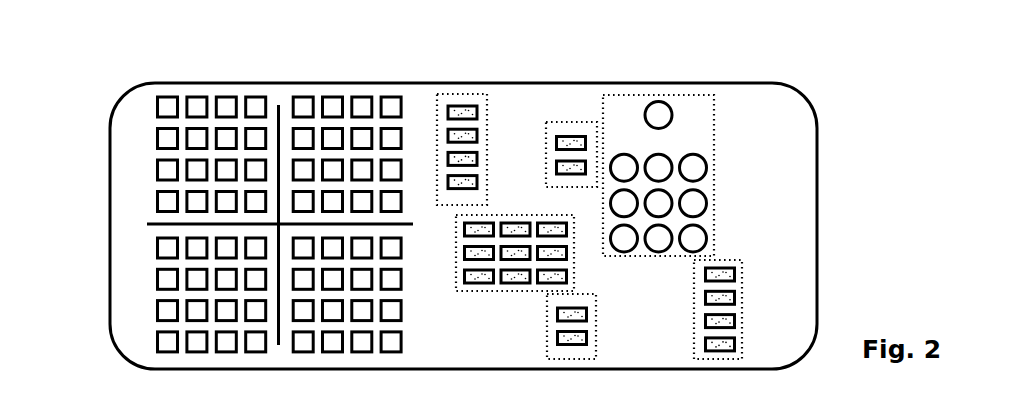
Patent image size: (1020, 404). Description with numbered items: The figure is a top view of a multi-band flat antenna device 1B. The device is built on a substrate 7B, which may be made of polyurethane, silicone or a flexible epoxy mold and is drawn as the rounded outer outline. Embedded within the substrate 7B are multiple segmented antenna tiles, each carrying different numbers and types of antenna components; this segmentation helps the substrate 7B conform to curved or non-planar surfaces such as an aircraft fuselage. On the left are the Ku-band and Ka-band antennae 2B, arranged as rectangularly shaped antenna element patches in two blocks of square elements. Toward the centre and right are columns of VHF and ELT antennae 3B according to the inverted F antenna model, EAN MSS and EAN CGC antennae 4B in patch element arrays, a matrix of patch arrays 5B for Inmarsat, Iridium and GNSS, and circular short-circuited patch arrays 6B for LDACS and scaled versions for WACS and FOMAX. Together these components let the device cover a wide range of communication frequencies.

The multi-band flat antenna device 1B is at (137, 65).
The Ku-band and Ka-band antennae 2B is at (147, 154).
The VHF and ELT antennae 3B is at (467, 94).
The EAN MSS and EAN CGC antennae 4B is at (574, 119).
The patch arrays 5B is at (536, 214).
The circular short-circuited patch arrays 6B is at (648, 95).
The substrate 7B is at (817, 148).